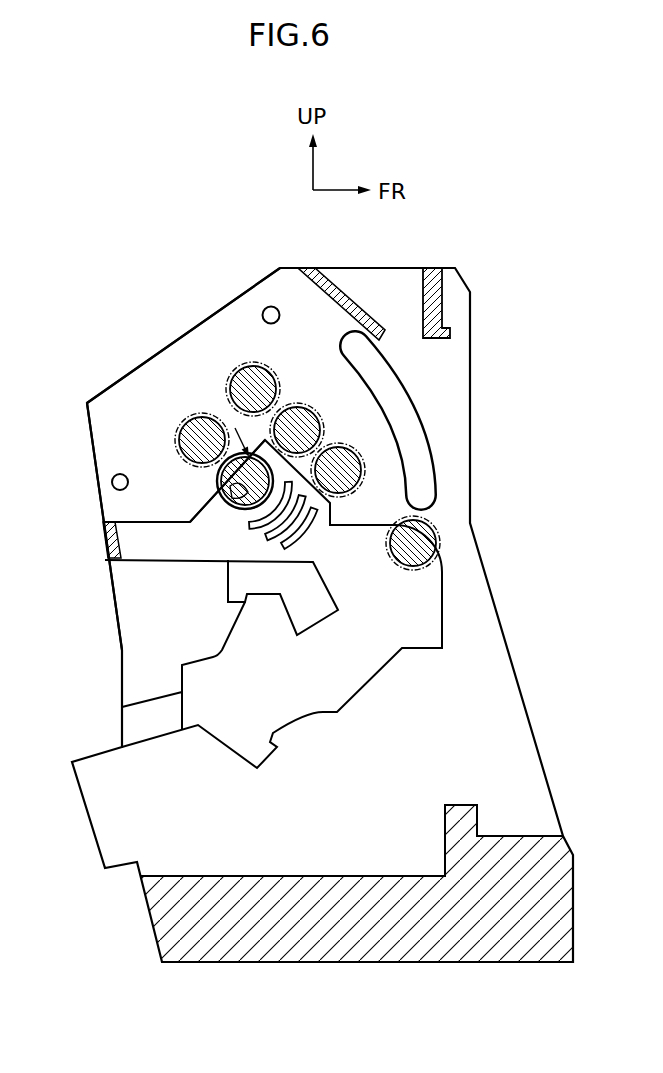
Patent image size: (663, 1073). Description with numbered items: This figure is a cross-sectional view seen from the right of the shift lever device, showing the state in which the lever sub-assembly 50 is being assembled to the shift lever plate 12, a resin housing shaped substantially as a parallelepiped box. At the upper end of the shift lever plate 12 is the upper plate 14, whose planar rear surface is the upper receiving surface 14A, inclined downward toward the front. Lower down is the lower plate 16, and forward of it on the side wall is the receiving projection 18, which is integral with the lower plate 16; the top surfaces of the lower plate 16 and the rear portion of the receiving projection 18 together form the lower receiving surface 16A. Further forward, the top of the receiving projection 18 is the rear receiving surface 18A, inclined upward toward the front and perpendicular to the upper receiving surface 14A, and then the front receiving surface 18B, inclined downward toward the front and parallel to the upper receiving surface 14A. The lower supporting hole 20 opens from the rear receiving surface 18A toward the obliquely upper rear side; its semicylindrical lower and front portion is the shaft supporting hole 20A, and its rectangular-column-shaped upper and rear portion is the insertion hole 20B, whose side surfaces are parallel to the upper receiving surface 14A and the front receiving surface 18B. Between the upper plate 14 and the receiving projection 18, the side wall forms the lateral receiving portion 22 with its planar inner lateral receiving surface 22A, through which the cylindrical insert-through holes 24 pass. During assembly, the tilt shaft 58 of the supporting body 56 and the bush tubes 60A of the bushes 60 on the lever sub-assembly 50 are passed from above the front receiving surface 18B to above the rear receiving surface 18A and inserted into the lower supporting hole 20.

The shift lever plate 12 is at (506, 619).
The upper plate 14 is at (348, 302).
The upper receiving surface 14A is at (322, 300).
The lower plate 16 is at (104, 540).
The lower receiving surface 16A is at (104, 522).
The receiving projection 18 is at (147, 548).
The rear receiving surface 18A is at (200, 506).
The front receiving surface 18B is at (332, 455).
The lower supporting hole 20 is at (217, 480).
The shaft supporting hole 20A is at (240, 500).
The insertion hole 20B is at (227, 502).
The lateral receiving portion 22 is at (188, 347).
The lateral receiving surface 22A is at (120, 405).
The insert-through hole 24 is at (263, 307).
The lever sub-assembly 50 is at (222, 420).
The supporting body 56 is at (268, 494).
The tilt shaft 58 is at (416, 572).
The bush 60 is at (307, 452).
The bush tube 60A is at (300, 548).